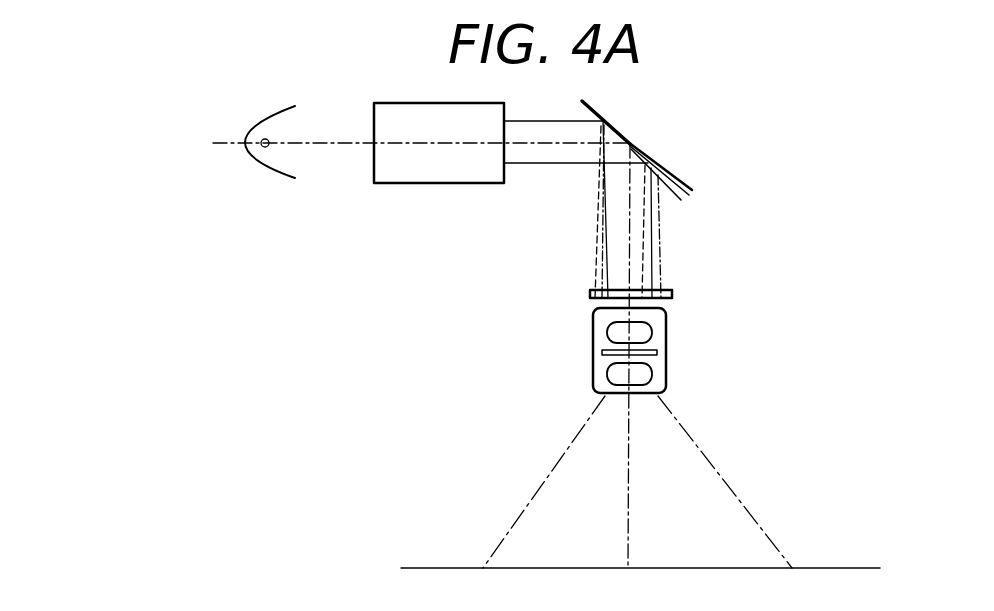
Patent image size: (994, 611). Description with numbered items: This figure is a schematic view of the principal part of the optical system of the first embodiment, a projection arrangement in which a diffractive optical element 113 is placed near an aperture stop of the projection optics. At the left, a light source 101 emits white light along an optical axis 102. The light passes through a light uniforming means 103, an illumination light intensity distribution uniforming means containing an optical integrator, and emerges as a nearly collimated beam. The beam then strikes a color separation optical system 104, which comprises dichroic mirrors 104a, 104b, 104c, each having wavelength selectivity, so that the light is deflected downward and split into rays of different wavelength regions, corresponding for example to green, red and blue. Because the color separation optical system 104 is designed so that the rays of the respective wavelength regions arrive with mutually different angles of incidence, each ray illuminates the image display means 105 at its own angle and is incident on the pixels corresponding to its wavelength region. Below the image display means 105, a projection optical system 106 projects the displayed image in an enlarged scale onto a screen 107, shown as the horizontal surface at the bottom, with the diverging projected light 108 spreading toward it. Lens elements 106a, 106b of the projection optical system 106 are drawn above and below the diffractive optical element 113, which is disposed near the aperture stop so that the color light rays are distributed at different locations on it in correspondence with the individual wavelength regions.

The light source 101 is at (265, 147).
The optical axis 102 is at (325, 144).
The light uniforming means 103 is at (400, 176).
The color separation optical system 104 is at (681, 167).
The dichroic mirror 104a is at (675, 182).
The dichroic mirror 104b is at (672, 200).
The dichroic mirror 104c is at (693, 192).
The image display means 105 is at (673, 293).
The projection optical system 106 is at (639, 352).
The first lens 106a is at (607, 332).
The second lens 106b is at (607, 373).
The diffractive optical element 113 is at (602, 352).
The screen 107 is at (815, 568).
The projected light beam 108 is at (627, 483).